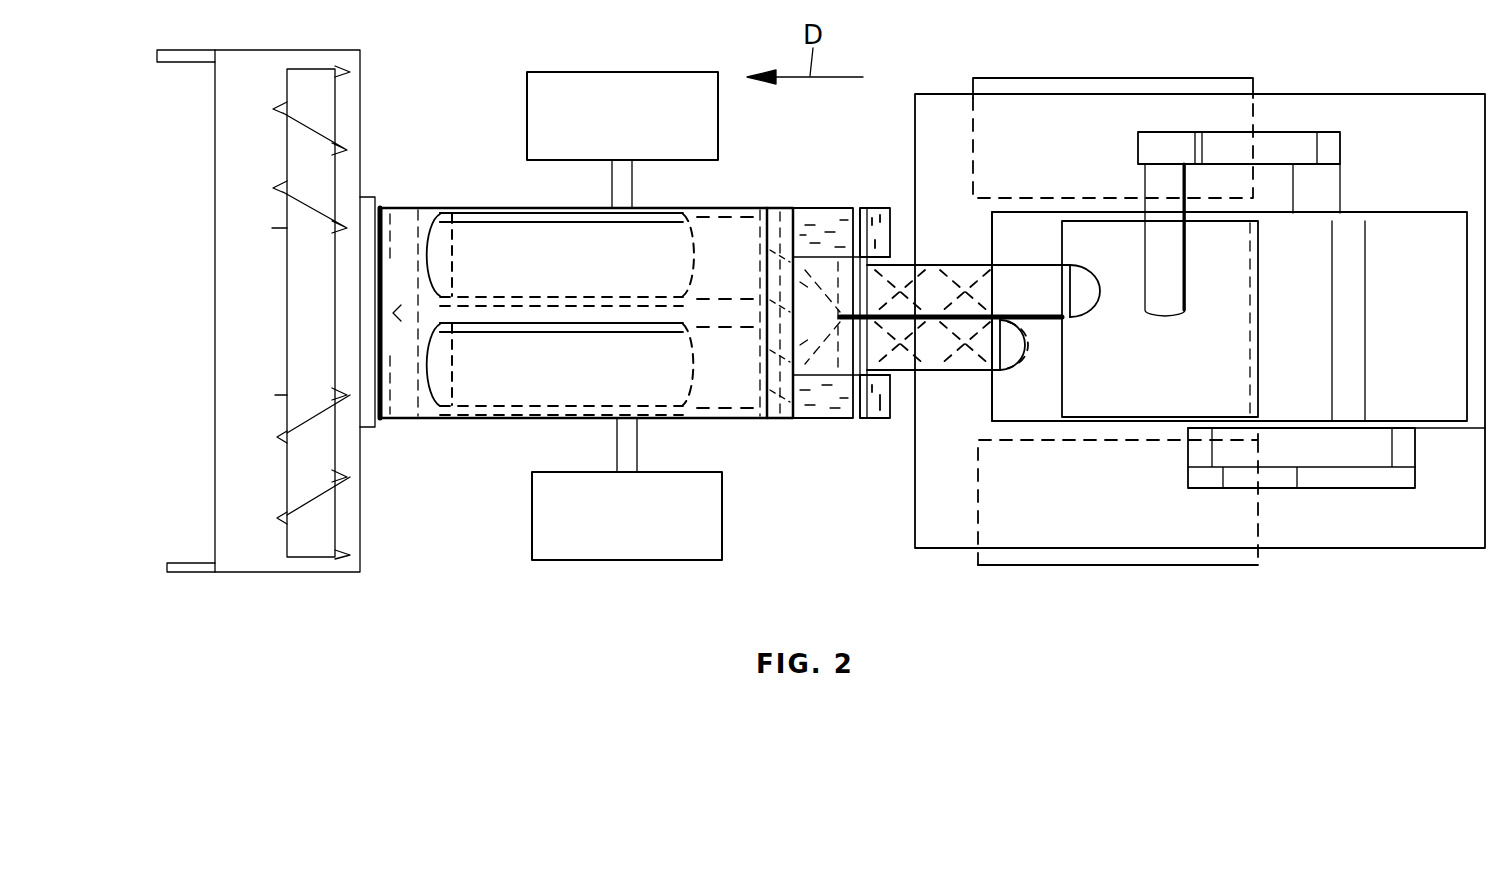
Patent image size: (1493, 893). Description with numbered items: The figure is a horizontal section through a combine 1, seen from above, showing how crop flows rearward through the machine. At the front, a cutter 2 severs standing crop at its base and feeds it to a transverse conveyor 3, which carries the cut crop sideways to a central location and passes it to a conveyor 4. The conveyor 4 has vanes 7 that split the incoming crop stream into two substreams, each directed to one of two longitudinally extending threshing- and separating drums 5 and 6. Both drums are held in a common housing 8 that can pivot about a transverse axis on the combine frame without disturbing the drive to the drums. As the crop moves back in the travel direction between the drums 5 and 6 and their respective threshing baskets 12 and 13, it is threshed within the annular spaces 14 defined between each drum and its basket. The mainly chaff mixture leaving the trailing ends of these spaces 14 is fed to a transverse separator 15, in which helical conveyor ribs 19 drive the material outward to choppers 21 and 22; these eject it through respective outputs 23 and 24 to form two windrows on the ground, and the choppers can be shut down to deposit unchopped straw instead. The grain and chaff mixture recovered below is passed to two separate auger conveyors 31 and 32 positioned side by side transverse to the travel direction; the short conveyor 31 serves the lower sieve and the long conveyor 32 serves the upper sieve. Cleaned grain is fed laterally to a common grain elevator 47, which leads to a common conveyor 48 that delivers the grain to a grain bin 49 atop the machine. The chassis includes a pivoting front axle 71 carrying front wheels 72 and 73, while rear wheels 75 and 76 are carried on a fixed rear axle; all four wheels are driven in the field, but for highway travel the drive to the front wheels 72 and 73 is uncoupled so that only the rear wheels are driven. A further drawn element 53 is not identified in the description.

The combine 1 is at (1385, 94).
The cutter 2 is at (222, 538).
The transverse conveyor 3 is at (308, 540).
The conveyor 4 is at (398, 222).
The threshing- and separating drum 5 is at (485, 395).
The threshing- and separating drum 6 is at (488, 240).
The vanes 7 is at (402, 413).
The housing 8 is at (745, 208).
The threshing basket 12 is at (512, 420).
The threshing basket 13 is at (510, 210).
The annular space 14 is at (465, 215).
The separator 15 is at (788, 210).
The helical conveyor ribs 19 is at (817, 330).
The chopper 21 is at (812, 400).
The chopper 22 is at (818, 223).
The output 23 is at (878, 402).
The output 24 is at (878, 210).
The auger conveyor 31 is at (933, 378).
The auger conveyor 32 is at (943, 263).
The grain elevator 47 is at (1268, 146).
The common conveyor 48 is at (1170, 182).
The grain bin 49 is at (948, 118).
The support block 53 is at (1315, 477).
The front axle 71 is at (623, 440).
The front wheel 72 is at (568, 540).
The front wheel 73 is at (700, 137).
The rear wheel 75 is at (1140, 557).
The rear wheel 76 is at (1068, 85).